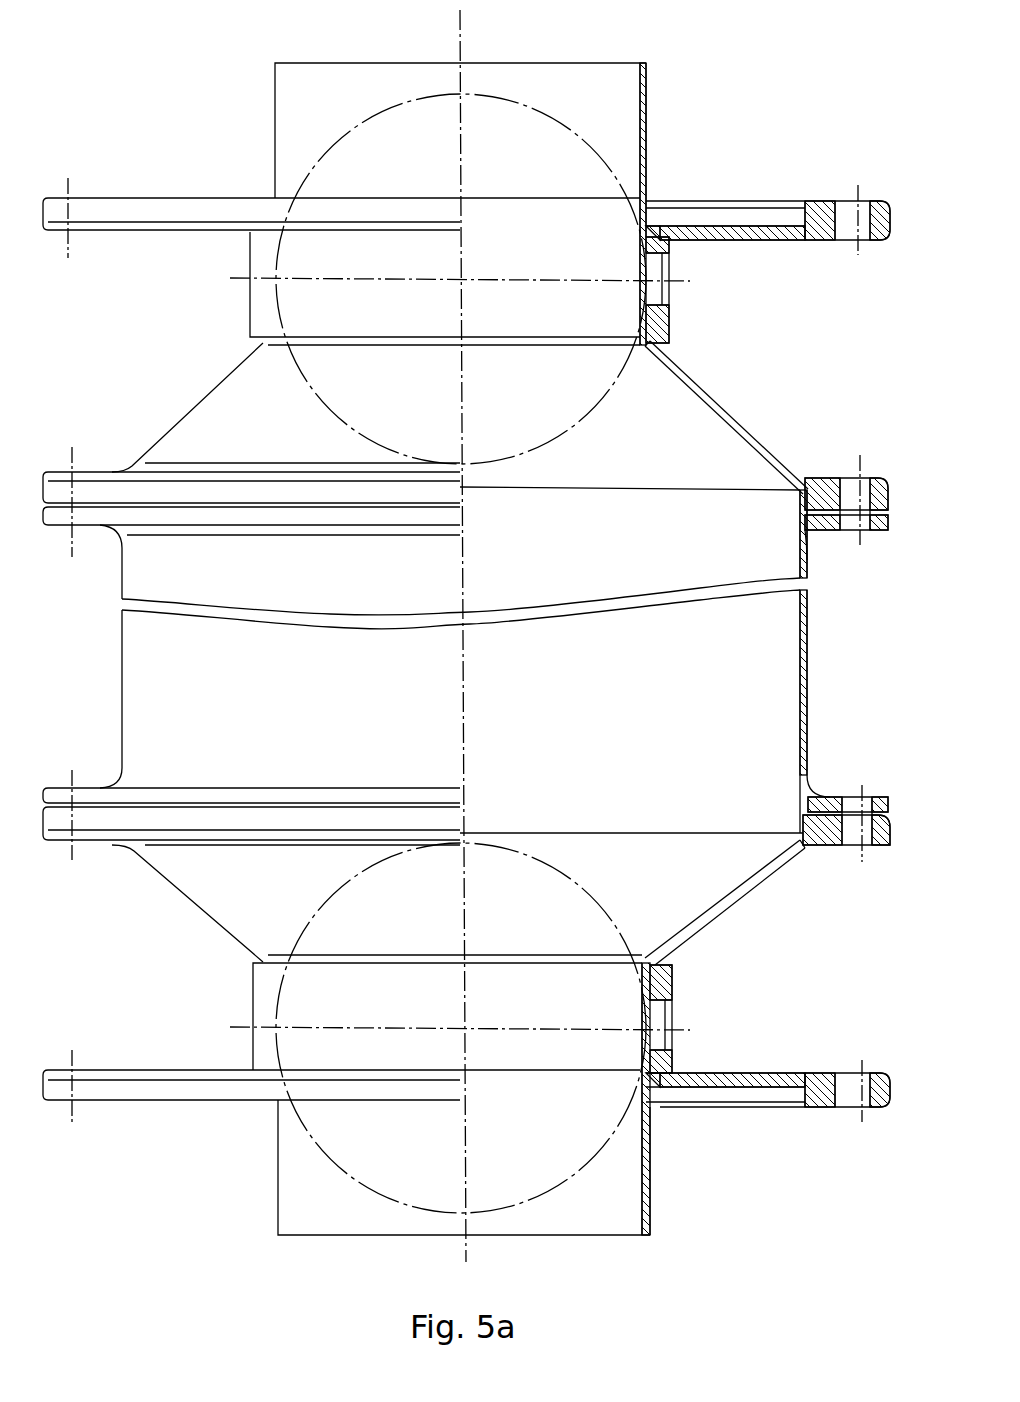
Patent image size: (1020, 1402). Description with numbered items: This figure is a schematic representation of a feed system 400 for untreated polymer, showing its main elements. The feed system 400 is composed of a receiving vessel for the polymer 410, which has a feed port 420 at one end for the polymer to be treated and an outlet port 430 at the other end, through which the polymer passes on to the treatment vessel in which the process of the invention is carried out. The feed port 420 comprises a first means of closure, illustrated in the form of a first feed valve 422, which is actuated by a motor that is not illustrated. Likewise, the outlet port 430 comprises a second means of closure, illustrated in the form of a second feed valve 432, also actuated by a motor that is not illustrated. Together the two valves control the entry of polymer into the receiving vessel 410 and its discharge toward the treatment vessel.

The feed system 400 is at (730, 385).
The receiving vessel for the polymer 410 is at (812, 690).
The feed port 420 is at (598, 62).
The first feed valve 422 is at (600, 165).
The outlet port 430 is at (598, 1238).
The second feed valve 432 is at (607, 1142).